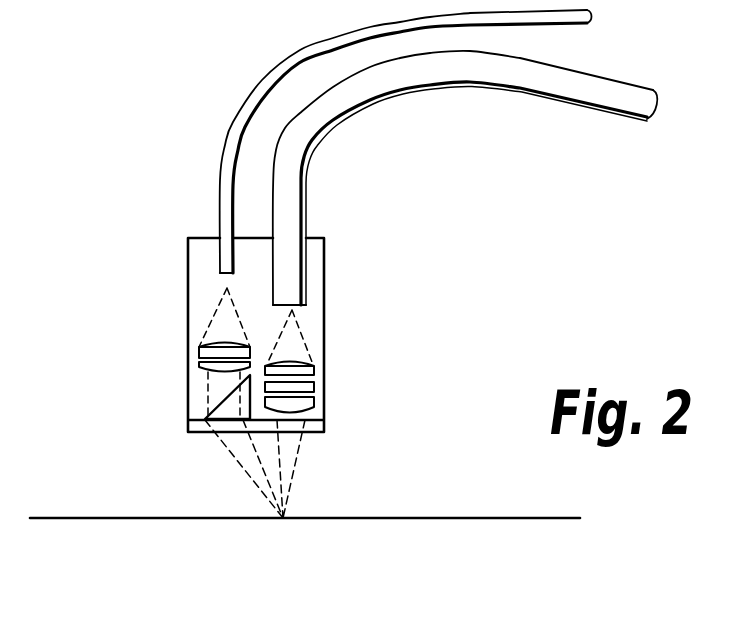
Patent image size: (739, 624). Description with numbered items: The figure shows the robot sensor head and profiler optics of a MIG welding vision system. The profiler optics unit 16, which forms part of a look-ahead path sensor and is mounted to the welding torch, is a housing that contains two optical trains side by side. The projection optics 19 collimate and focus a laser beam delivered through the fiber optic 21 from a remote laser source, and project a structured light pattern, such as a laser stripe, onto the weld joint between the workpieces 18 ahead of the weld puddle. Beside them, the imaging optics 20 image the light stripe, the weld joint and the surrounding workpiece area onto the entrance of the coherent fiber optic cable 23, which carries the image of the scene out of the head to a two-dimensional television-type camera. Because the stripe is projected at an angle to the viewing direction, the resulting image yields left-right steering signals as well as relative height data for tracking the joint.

The profiler optics unit 16 is at (188, 284).
The workpieces 18 is at (443, 518).
The projection optics 19 is at (178, 371).
The imaging optics 20 is at (343, 390).
The fiber optic 21 is at (225, 145).
The coherent fiber optic cable 23 is at (322, 143).